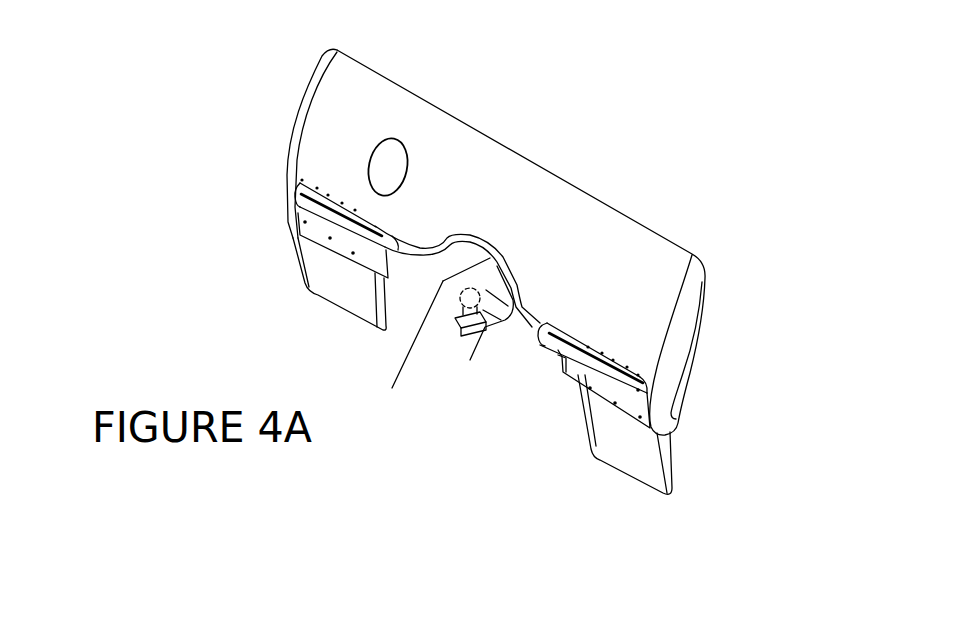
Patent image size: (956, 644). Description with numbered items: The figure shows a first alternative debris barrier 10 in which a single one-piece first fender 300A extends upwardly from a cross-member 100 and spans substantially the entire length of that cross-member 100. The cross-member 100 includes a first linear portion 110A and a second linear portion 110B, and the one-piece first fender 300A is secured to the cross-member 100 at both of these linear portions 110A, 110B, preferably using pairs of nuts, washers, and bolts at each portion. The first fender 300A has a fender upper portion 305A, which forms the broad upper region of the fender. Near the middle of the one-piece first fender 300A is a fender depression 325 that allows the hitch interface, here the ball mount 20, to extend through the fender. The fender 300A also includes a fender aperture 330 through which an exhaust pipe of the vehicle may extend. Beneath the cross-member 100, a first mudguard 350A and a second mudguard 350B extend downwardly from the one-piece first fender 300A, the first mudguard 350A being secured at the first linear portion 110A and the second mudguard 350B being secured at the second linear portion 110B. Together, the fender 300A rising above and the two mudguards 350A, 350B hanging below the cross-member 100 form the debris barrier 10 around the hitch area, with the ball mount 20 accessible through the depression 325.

The debris barrier 10 is at (729, 90).
The ball mount 20 is at (487, 333).
The cross-member 100 is at (543, 347).
The first linear portion 110A is at (350, 240).
The second linear portion 110B is at (572, 372).
The first fender 300A is at (296, 118).
The fender upper portion 305A is at (322, 80).
The fender depression 325 is at (435, 330).
The fender aperture 330 is at (407, 140).
The first mudguard 350A is at (299, 255).
The second mudguard 350B is at (678, 462).